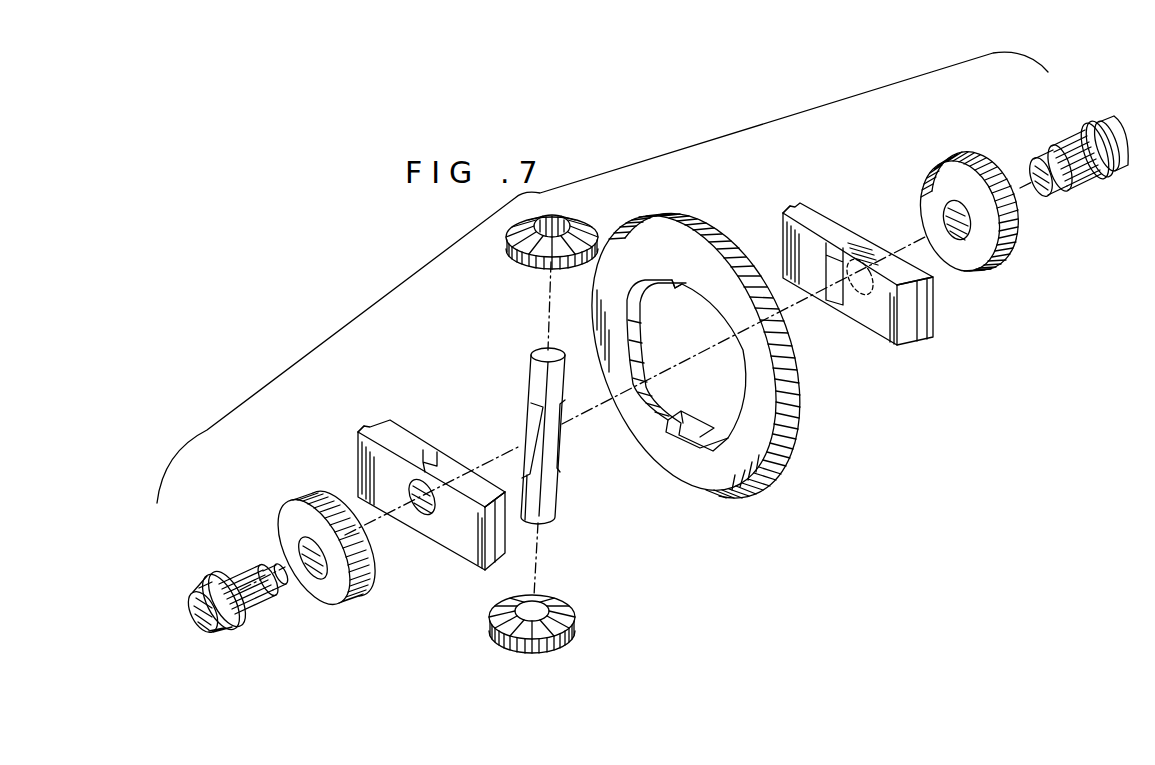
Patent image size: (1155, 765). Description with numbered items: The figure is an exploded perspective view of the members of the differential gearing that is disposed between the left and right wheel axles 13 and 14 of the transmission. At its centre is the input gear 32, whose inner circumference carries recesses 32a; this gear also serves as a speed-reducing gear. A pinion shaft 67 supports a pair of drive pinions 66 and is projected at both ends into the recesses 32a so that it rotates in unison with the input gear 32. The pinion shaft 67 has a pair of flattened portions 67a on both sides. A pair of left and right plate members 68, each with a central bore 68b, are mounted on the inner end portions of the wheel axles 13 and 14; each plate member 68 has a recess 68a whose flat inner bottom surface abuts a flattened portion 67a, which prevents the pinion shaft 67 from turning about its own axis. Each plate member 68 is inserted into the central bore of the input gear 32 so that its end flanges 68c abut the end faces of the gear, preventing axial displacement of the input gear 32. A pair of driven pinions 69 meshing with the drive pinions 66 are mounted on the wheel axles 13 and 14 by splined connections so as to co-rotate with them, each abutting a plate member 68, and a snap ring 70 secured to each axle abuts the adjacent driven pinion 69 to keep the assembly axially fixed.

The left wheel axle 13 is at (223, 618).
The right wheel axle 14 is at (1112, 153).
The input gear 32 is at (705, 218).
The recesses 32a is at (694, 293).
The drive pinions 66 is at (593, 227).
The pinion shaft 67 is at (525, 384).
The flattened portions 67a is at (526, 426).
The plate members 68 is at (456, 546).
The recess 68a is at (428, 451).
The central bore 68b is at (419, 516).
The end flanges 68c is at (361, 430).
The driven pinions 69 is at (318, 498).
The snap ring 70 is at (224, 577).